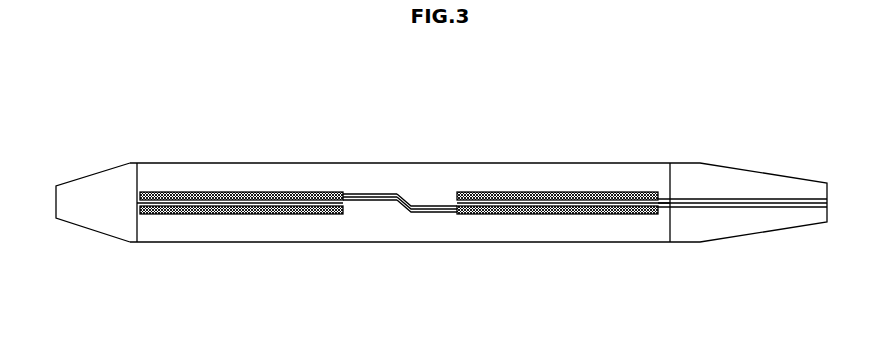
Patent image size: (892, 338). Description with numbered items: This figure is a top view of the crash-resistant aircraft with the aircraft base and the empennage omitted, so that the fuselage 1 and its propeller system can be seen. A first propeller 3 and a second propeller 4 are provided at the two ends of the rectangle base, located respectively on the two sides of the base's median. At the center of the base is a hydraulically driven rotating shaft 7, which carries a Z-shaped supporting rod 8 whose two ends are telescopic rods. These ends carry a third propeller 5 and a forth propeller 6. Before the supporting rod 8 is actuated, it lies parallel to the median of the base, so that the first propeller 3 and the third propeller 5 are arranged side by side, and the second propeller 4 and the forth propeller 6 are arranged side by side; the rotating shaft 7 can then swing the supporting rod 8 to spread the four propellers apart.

The fuselage 1 is at (688, 180).
The first propeller 3 is at (143, 208).
The second propeller 4 is at (655, 192).
The third propeller 5 is at (143, 193).
The forth propeller 6 is at (655, 210).
The rotating shaft 7 is at (397, 195).
The supporting rod 8 is at (357, 194).